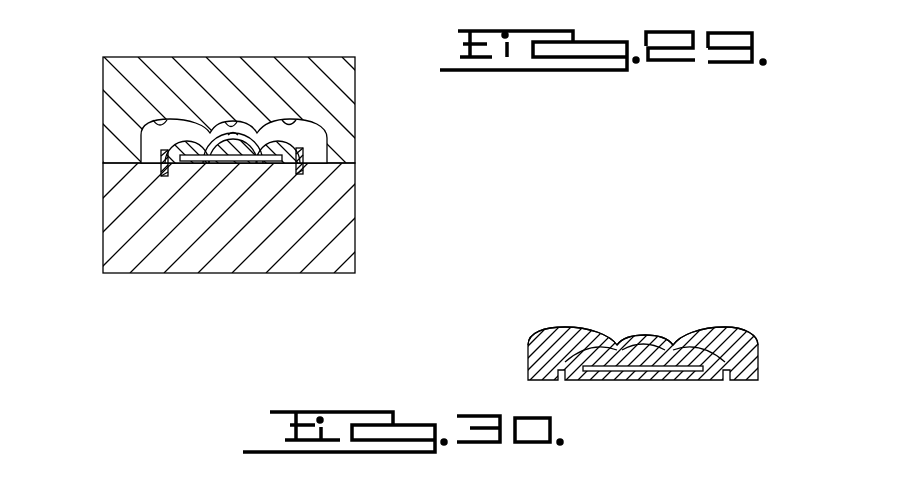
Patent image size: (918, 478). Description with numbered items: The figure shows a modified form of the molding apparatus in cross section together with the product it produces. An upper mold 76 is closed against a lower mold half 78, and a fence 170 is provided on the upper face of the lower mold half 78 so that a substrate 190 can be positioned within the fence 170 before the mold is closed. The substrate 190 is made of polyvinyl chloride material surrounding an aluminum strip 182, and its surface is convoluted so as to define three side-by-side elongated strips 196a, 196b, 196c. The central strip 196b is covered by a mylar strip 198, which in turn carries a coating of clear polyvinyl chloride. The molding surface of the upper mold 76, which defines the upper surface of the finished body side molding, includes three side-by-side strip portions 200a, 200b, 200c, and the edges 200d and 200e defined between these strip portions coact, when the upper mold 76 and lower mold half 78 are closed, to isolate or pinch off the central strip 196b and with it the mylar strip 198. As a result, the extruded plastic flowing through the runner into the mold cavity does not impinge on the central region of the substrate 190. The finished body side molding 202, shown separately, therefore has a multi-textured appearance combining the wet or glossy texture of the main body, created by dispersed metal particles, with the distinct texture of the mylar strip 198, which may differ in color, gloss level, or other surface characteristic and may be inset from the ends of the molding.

In FIG. 29, the upper mold 76 is at (103, 113).
In FIG. 29, the lower mold half 78 is at (103, 237).
In FIG. 29, the fence 170 is at (300, 158).
In FIG. 29, the aluminum strip 182 is at (285, 166).
In FIG. 29, the substrate 190 is at (298, 126).
In FIG. 30, the elongated strip 196a is at (572, 343).
In FIG. 30, the central strip 196b is at (655, 340).
In FIG. 30, the elongated strip 196c is at (710, 330).
In FIG. 29, the mylar strip 198 is at (233, 140).
In FIG. 30, the mylar strip 198 is at (641, 337).
In FIG. 29, the strip portion 200a is at (155, 124).
In FIG. 29, the strip portion 200b is at (231, 124).
In FIG. 29, the strip portion 200c is at (305, 124).
In FIG. 29, the edge 200d is at (198, 168).
In FIG. 29, the edge 200e is at (258, 150).
In FIG. 30, the body side molding 202 is at (680, 402).